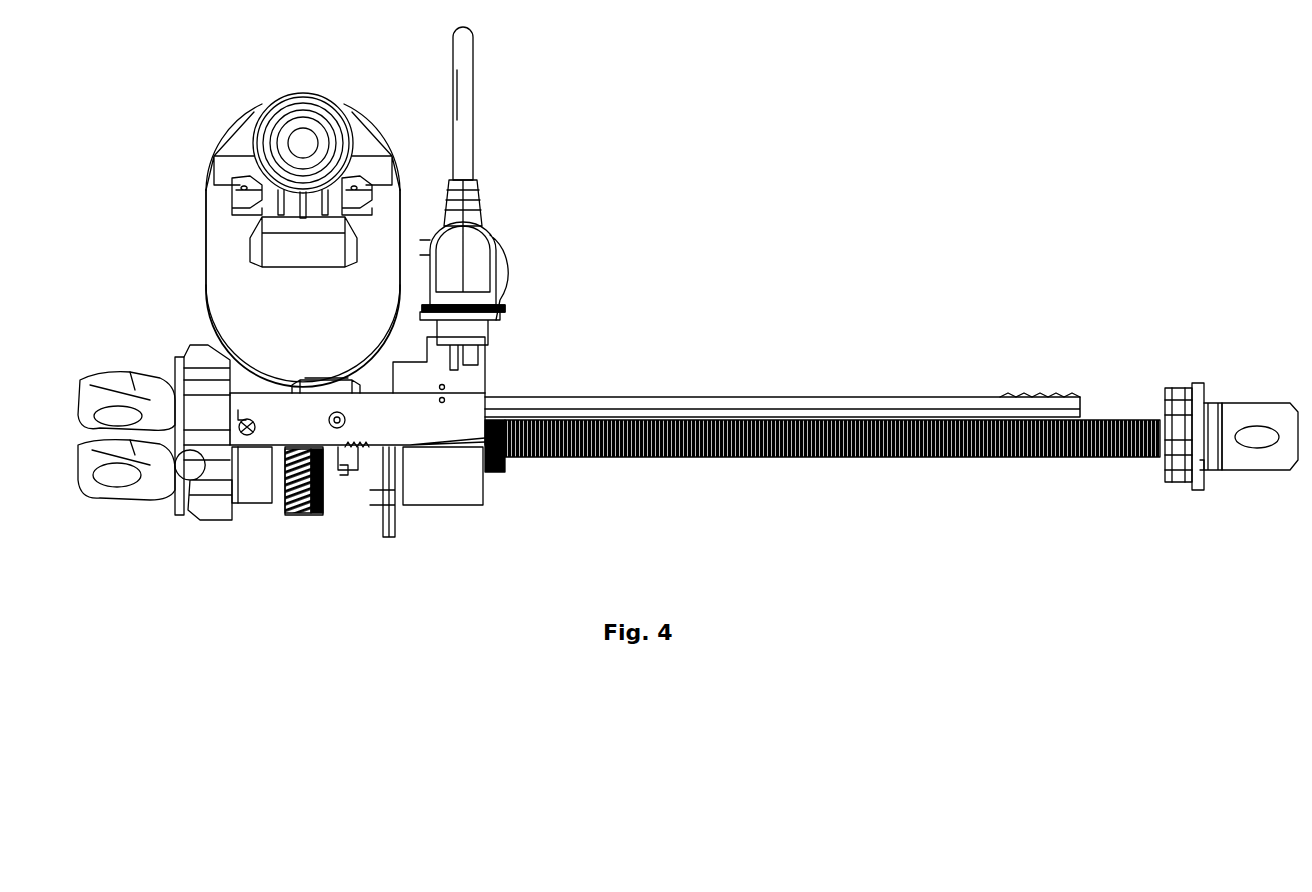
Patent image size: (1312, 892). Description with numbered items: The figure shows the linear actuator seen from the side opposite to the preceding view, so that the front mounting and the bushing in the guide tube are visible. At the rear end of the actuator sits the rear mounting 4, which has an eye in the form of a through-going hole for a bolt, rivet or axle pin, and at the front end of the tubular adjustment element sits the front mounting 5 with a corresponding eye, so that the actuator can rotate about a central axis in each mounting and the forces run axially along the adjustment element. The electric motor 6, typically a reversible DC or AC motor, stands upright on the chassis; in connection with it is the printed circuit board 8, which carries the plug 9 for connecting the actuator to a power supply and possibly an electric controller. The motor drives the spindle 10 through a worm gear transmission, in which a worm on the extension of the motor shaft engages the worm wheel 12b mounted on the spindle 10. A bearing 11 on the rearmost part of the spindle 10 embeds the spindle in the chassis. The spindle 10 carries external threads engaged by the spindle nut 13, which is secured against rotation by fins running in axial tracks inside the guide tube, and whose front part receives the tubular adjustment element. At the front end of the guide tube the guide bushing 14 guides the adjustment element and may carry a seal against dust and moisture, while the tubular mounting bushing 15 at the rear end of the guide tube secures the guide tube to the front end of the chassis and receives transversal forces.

The rear mounting 4 is at (105, 392).
The front mounting 5 is at (1240, 462).
The electric motor 6 is at (222, 272).
The printed circuit board 8 is at (478, 375).
The plug 9 is at (502, 300).
The spindle 10 is at (878, 455).
The bearing 11 is at (254, 488).
The worm wheel 12b is at (316, 512).
The spindle nut 13 is at (496, 478).
The guide bushing 14 is at (1176, 408).
The mounting bushing 15 is at (430, 488).